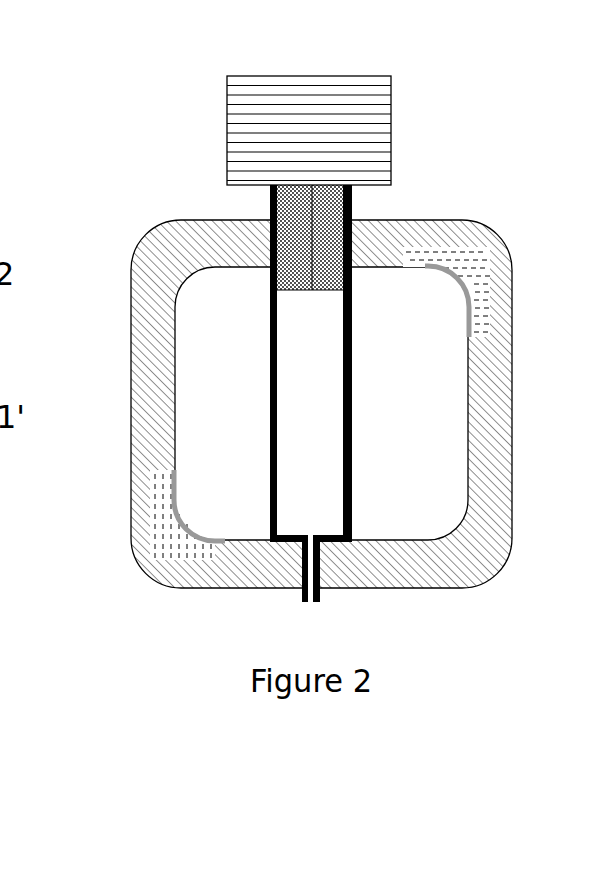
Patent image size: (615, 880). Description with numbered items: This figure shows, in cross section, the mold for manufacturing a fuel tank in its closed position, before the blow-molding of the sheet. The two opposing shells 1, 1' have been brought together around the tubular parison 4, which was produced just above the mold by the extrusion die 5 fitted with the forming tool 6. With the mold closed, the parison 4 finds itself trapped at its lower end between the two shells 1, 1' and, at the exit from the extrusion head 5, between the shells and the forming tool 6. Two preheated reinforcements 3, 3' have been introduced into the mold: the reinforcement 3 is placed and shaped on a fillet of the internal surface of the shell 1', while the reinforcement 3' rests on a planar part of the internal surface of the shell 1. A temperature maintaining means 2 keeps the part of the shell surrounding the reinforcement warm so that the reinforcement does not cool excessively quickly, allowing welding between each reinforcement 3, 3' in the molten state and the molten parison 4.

The shell 1 is at (292, 404).
The shell 1' is at (489, 516).
The temperature maintaining means 2 is at (480, 290).
The reinforcement 3 is at (206, 511).
The reinforcement 3' is at (417, 319).
The tubular parison 4 is at (272, 337).
The extrusion die 5 is at (227, 100).
The forming tool 6 is at (293, 196).